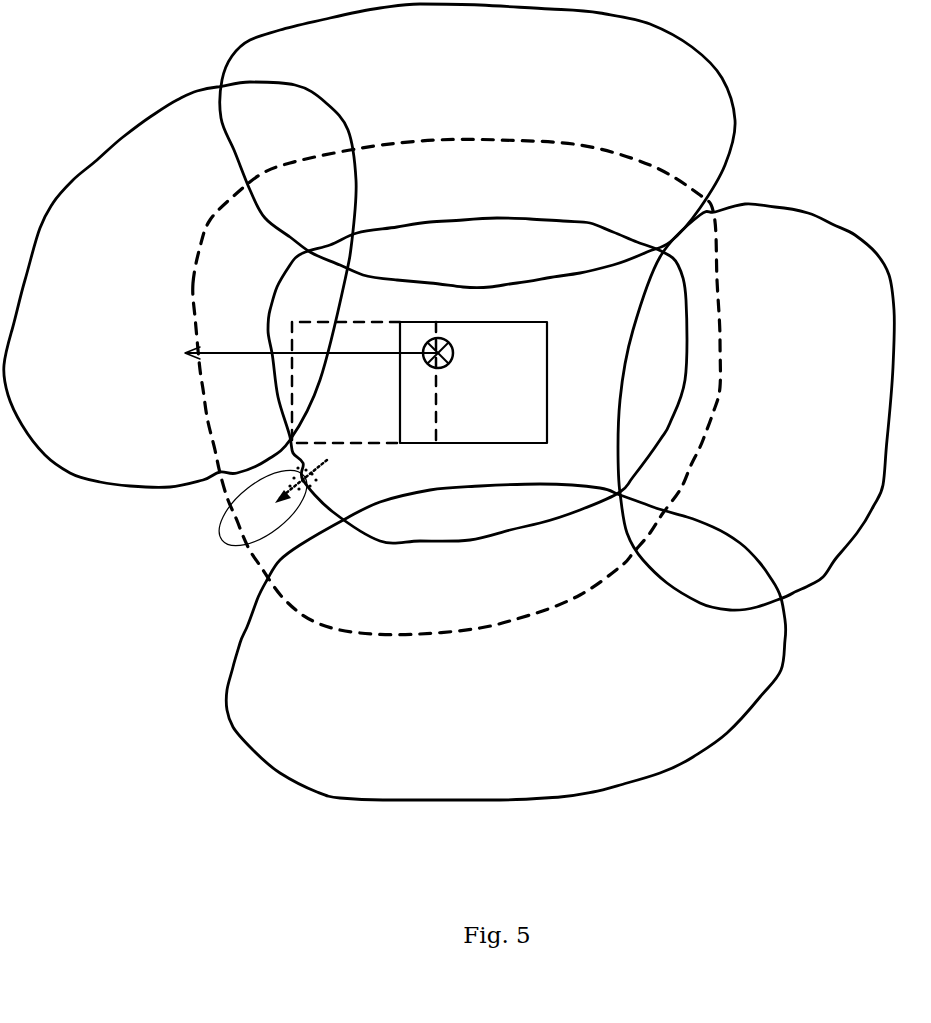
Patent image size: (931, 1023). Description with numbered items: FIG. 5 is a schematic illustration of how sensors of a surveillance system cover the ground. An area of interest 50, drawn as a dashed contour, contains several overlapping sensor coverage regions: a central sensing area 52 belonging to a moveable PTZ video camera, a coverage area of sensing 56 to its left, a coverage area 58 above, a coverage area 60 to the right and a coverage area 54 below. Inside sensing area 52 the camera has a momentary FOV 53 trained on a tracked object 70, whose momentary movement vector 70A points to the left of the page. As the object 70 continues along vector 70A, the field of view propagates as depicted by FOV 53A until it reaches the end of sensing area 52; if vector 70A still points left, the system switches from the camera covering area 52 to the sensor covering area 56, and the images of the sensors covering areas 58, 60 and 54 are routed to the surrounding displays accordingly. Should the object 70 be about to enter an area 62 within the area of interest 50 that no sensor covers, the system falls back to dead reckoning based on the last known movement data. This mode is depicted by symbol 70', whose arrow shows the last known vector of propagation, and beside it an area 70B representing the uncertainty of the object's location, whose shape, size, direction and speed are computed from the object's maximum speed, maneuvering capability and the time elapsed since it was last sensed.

The area of interest 50 is at (706, 212).
The sensing area 52 is at (394, 485).
The momentary FOV 53 is at (462, 395).
The FOV 53A is at (343, 383).
The coverage area 54 is at (457, 705).
The coverage area of sensing 56 is at (131, 327).
The coverage area 58 is at (471, 89).
The coverage area 60 is at (757, 433).
The uncovered area 62 is at (237, 482).
The object 70 is at (449, 327).
The movement vector 70A is at (249, 348).
The area of uncertainty 70B is at (222, 547).
The symbol 70' is at (315, 527).